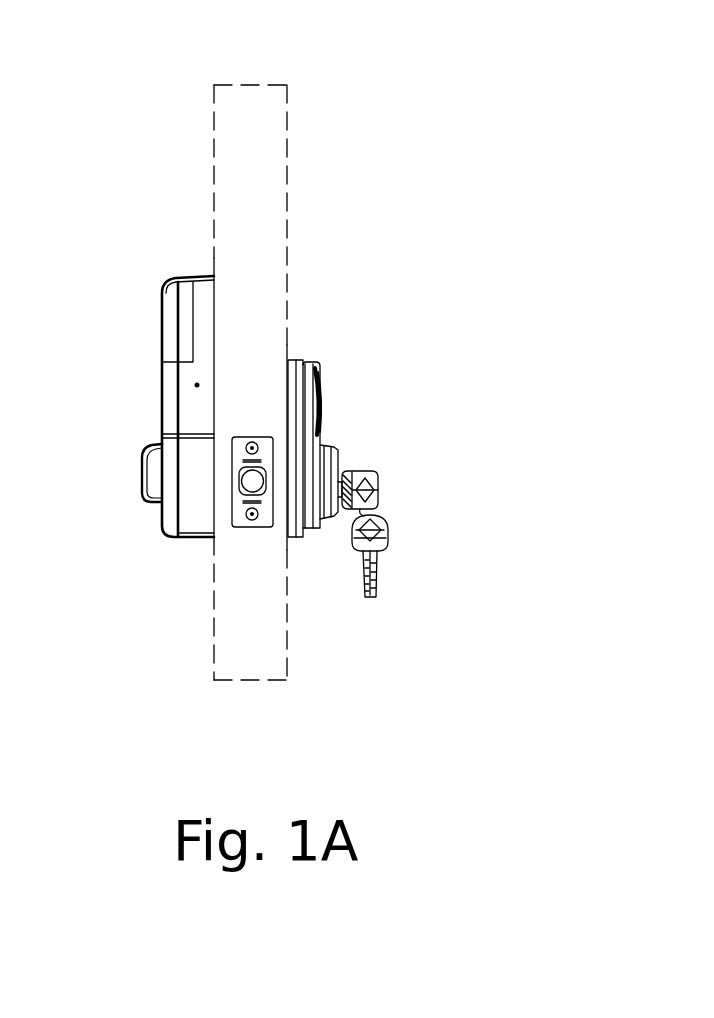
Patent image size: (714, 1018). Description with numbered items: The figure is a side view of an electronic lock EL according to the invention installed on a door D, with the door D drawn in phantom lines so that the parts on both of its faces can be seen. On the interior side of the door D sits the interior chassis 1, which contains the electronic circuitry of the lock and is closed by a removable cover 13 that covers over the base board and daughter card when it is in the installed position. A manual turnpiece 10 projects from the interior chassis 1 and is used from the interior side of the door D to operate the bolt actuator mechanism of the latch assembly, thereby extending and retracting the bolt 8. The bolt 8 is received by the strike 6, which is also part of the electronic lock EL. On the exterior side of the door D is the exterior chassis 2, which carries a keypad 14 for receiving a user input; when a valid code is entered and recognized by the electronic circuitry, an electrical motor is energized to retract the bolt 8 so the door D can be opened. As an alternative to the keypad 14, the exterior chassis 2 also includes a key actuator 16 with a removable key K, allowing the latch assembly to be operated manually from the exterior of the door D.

The electronic lock EL is at (564, 156).
The door D is at (245, 84).
The interior chassis 1 is at (122, 300).
The removable cover 13 is at (160, 318).
The manual turnpiece 10 is at (140, 475).
The bolt 8 is at (248, 480).
The strike 6 is at (248, 527).
The exterior chassis 2 is at (406, 371).
The keypad 14 is at (358, 396).
The key actuator 16 is at (380, 455).
The key K is at (382, 480).